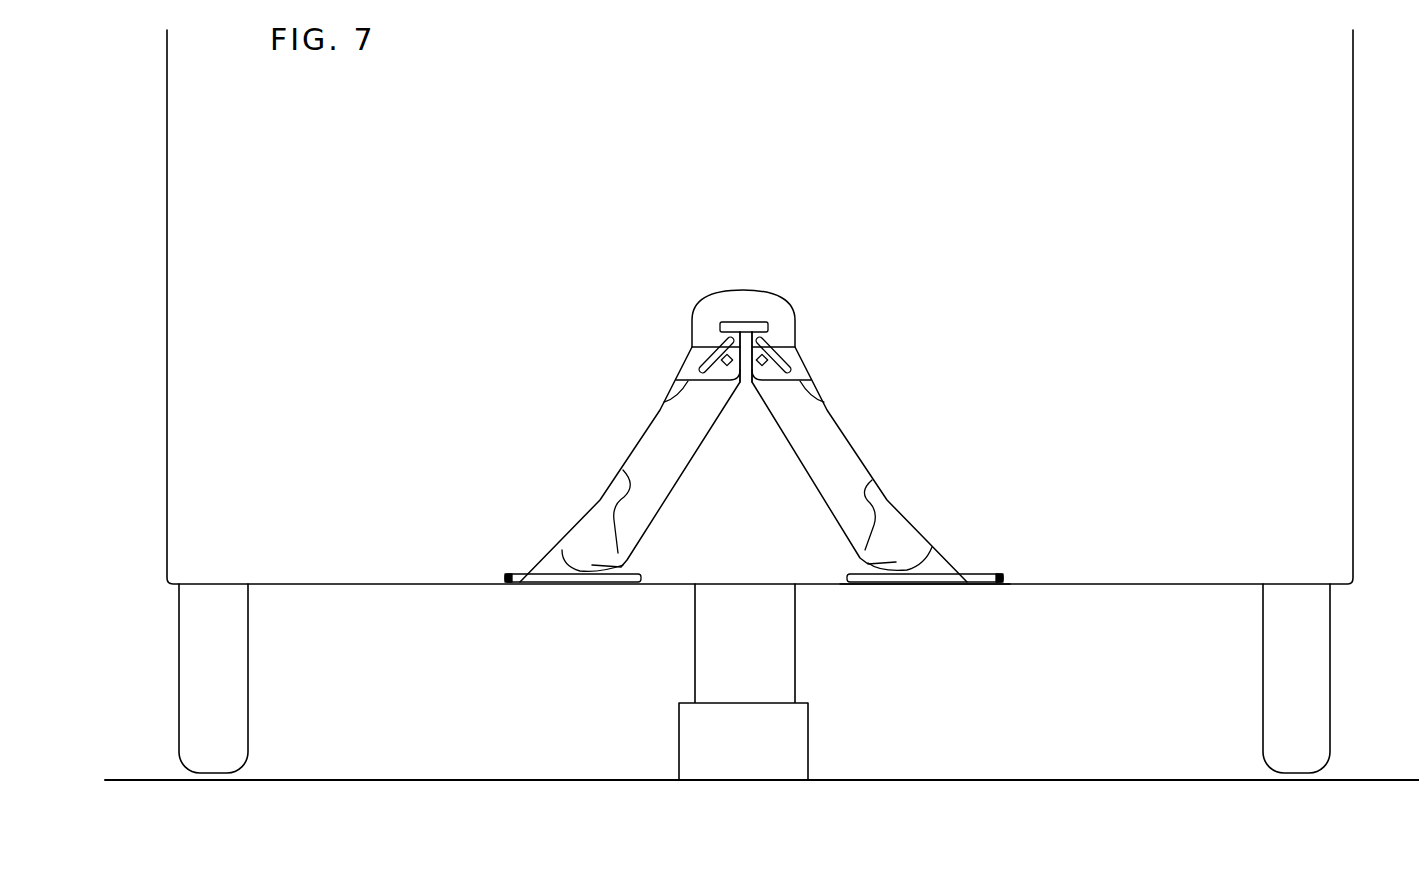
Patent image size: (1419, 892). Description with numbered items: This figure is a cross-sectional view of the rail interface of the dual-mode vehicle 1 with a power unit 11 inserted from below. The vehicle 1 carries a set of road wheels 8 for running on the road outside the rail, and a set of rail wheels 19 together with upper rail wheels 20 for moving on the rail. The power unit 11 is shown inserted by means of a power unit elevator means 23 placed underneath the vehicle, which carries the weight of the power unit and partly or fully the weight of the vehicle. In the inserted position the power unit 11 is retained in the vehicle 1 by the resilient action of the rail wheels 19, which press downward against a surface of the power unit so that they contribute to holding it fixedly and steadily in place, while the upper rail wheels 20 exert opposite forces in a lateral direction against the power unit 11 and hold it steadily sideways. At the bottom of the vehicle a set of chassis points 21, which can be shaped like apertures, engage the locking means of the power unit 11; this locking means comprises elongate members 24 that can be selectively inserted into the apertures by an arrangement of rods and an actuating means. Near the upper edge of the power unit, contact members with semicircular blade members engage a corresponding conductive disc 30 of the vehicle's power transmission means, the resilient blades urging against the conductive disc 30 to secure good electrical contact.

The dual-mode vehicle 1 is at (1142, 273).
The road wheels 8 is at (1263, 698).
The power unit 11 is at (746, 513).
The rail wheels 19 is at (623, 470).
The upper rail wheels 20 is at (662, 402).
The chassis points 21 is at (497, 562).
The power unit elevator means 23 is at (815, 654).
The elongate members 24 is at (943, 602).
The conductive disc 30 is at (767, 338).